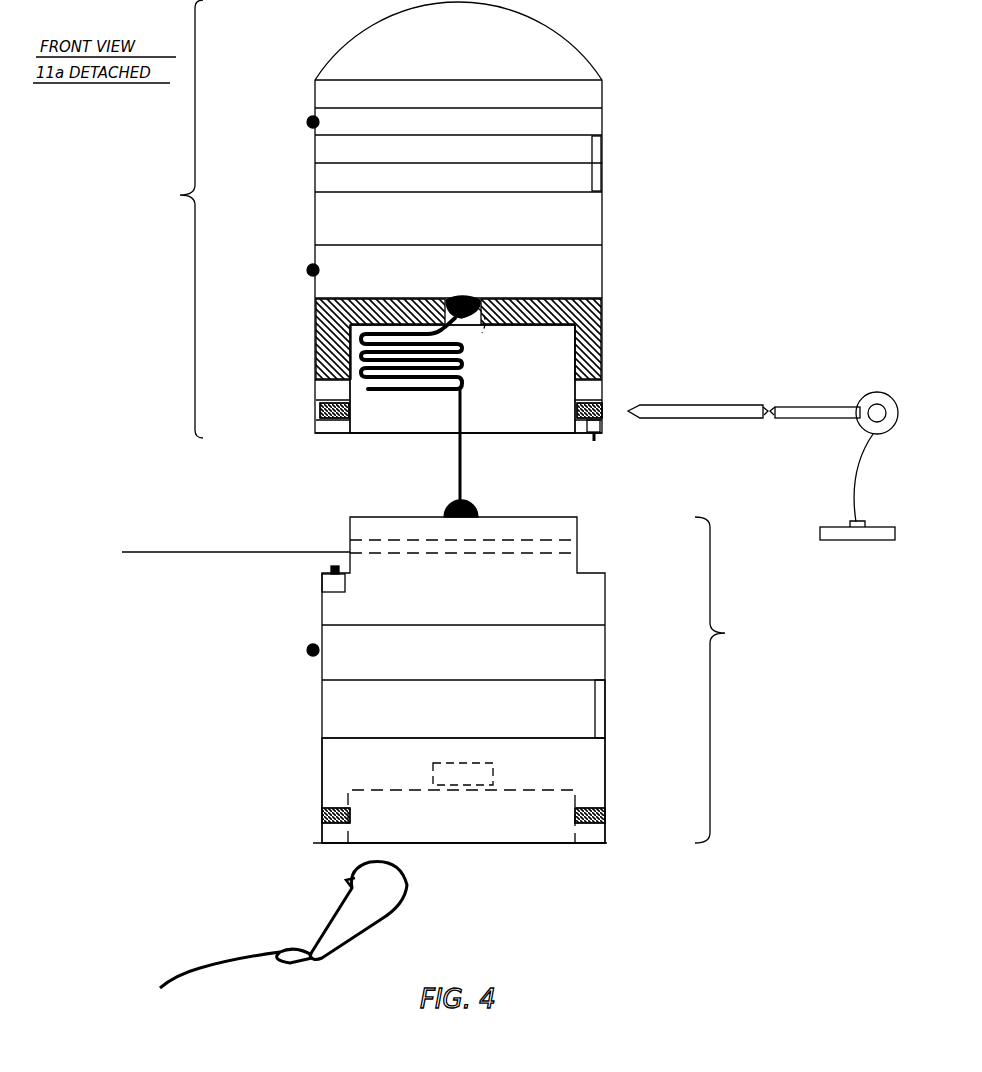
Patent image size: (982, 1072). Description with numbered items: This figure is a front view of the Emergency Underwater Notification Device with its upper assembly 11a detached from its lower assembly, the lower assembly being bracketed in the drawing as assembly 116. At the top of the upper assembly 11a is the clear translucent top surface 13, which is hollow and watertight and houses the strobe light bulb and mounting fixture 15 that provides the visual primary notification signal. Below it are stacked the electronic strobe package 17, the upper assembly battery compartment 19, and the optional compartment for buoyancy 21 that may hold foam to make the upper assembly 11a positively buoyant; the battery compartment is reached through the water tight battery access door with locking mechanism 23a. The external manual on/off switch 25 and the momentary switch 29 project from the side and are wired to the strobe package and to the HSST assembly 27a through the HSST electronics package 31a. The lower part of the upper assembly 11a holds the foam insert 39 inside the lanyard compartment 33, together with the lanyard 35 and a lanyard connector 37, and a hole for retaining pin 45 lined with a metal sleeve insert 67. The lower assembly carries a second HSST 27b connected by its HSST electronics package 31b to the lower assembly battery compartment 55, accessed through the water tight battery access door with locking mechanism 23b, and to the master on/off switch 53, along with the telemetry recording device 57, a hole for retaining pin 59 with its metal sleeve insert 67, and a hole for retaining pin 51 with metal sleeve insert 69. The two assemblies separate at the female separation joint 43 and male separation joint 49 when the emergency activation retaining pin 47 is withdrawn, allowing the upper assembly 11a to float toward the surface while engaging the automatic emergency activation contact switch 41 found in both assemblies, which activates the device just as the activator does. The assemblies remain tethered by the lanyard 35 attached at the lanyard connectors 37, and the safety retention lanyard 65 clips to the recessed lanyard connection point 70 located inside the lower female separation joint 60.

The upper assembly 11a is at (146, 193).
The lower housing section 116 is at (541, 680).
The top surface 13 is at (458, 58).
The strobe light bulb and mounting fixture 15 is at (458, 97).
The electronic strobe package 17 is at (458, 124).
The upper assembly battery compartment 19 is at (458, 152).
The optional compartment for buoyancy 21 is at (458, 181).
The water tight battery access door with locking mechanism 23a is at (603, 153).
The water tight battery access door with locking mechanism 23b is at (605, 706).
The external manual on/off switch 25 is at (307, 118).
The HSST assembly 27a is at (458, 224).
The HSST 27b is at (463, 604).
The momentary switch 29 is at (307, 270).
The HSST electronics package 31a is at (458, 275).
The HSST electronics package 31b is at (463, 658).
The lanyard compartment 33 is at (462, 379).
The lanyard 35 is at (468, 465).
The lanyard connector 37 is at (445, 506).
The foam insert 39 is at (603, 313).
The automatic emergency activation contact switch 41 is at (594, 446).
The female separation joint 43 is at (378, 445).
The hole for retaining pin 45 is at (320, 410).
The emergency activation retaining pin 47 is at (736, 410).
The male separation joint 49 is at (350, 528).
The hole for retaining pin 51 is at (590, 543).
The master on/off switch 53 is at (306, 650).
The lower assembly battery compartment 55 is at (463, 715).
The telemetry recording device 57 is at (463, 790).
The hole for retaining pin 59 is at (322, 816).
The female separation joint 60 is at (492, 815).
The safety retention lanyard 65 is at (320, 901).
The metal sleeve insert 67 is at (322, 405).
The metal sleeve insert 69 is at (220, 552).
The recessed lanyard connection point 70 is at (502, 777).